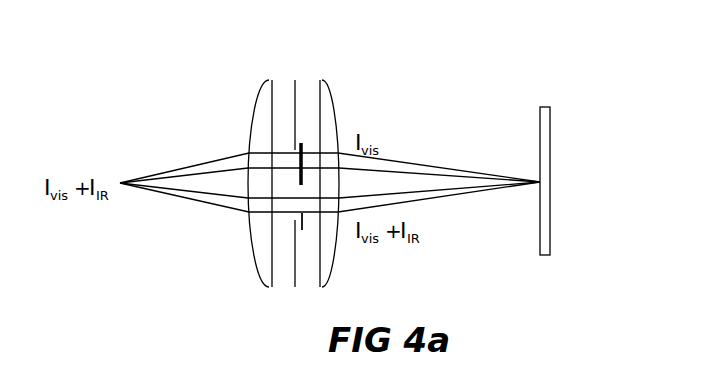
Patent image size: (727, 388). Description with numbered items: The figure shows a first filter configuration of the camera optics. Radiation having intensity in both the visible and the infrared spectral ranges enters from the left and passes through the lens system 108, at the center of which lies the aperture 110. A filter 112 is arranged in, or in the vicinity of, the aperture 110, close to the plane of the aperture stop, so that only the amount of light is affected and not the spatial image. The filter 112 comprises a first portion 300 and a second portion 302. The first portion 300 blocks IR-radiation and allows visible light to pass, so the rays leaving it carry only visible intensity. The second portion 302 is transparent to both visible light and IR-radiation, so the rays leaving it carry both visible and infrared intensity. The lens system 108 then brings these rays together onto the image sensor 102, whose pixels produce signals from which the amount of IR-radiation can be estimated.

The image sensor 102 is at (545, 107).
The lens system 108 is at (320, 73).
The aperture 110 is at (295, 283).
The filter 112 is at (305, 215).
The first portion 300 is at (298, 152).
The second portion 302 is at (297, 213).